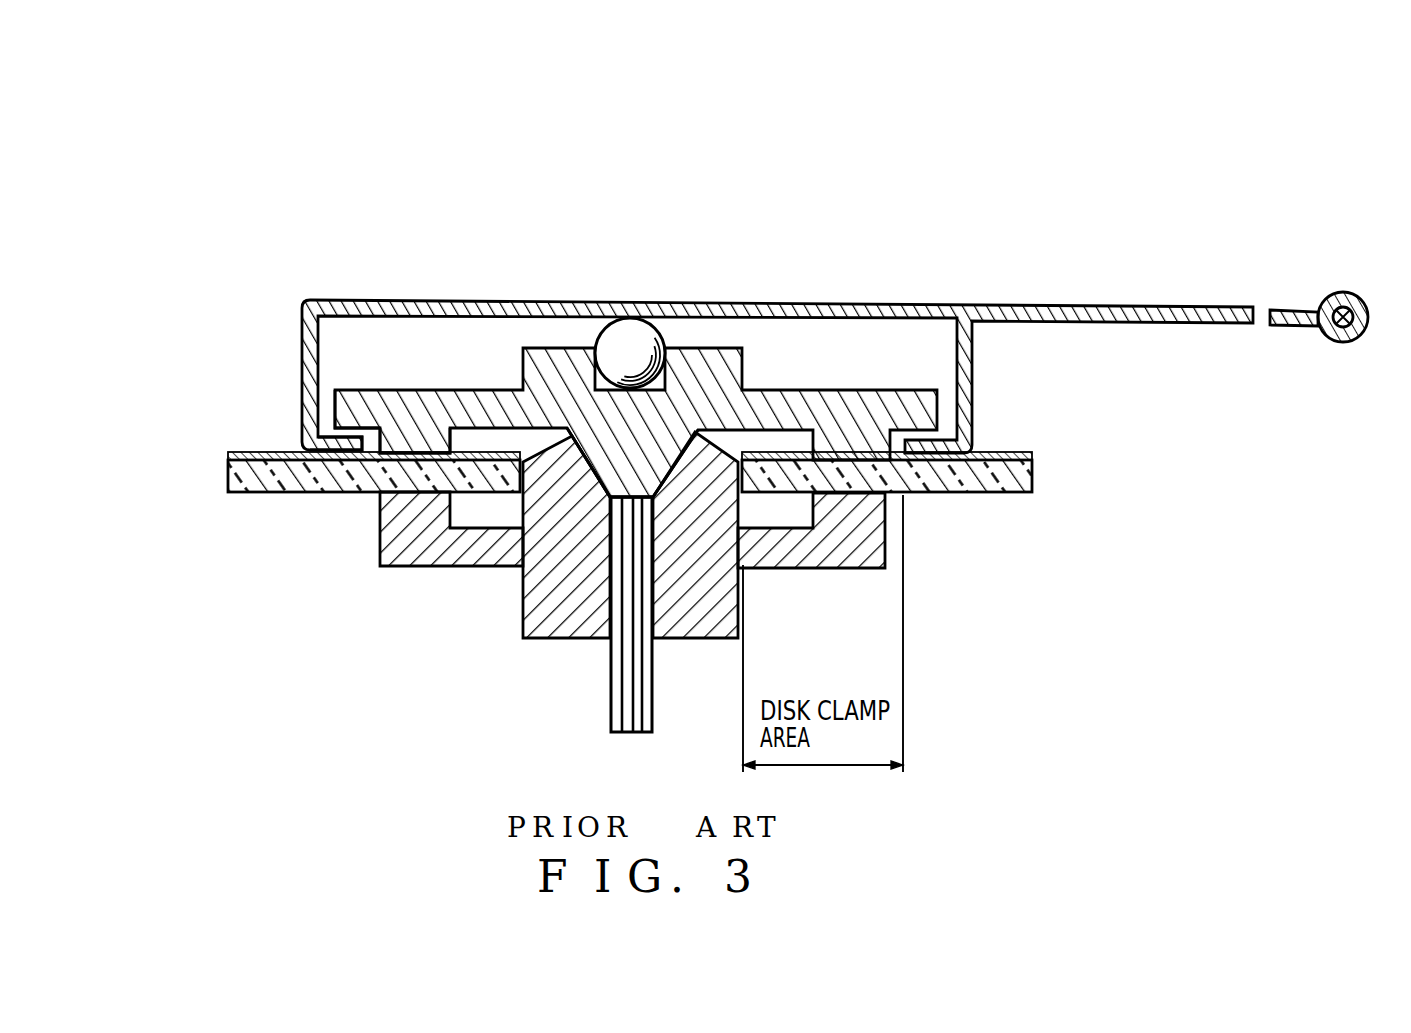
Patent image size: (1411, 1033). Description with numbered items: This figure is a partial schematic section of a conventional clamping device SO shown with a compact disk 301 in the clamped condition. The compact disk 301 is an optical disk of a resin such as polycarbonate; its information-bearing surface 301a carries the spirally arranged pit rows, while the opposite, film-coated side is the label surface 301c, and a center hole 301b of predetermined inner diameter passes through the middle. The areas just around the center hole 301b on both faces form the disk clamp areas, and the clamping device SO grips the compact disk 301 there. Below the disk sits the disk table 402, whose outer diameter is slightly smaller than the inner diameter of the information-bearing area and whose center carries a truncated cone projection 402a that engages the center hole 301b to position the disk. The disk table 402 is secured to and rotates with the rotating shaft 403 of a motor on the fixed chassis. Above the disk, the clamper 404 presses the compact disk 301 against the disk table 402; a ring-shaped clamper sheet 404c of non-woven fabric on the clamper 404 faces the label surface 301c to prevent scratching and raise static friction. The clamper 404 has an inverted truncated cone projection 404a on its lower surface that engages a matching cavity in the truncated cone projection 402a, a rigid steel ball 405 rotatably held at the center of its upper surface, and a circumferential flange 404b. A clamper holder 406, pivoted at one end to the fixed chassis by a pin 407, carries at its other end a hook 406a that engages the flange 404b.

The compact disk 301 is at (679, 480).
The information-bearing surface 301a is at (963, 500).
The center hole 301b is at (738, 460).
The label surface 301c is at (1003, 450).
The disk table 402 is at (610, 554).
The truncated cone projection 402a is at (569, 470).
The rotating shaft 403 is at (620, 702).
The clamper 404 is at (543, 404).
The inverted truncated cone projection 404a is at (612, 478).
The circumferential flange 404b is at (330, 403).
The clamper sheet 404c is at (378, 527).
The rigid steel ball 405 is at (633, 320).
The clamper holder 406 is at (717, 339).
The hook 406a is at (312, 427).
The pin 407 is at (1338, 295).
The clamping device SO is at (982, 243).